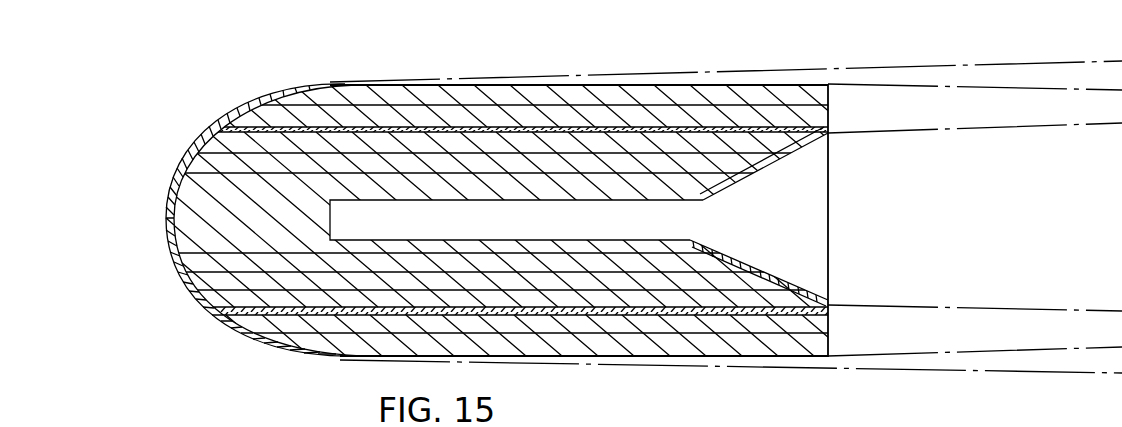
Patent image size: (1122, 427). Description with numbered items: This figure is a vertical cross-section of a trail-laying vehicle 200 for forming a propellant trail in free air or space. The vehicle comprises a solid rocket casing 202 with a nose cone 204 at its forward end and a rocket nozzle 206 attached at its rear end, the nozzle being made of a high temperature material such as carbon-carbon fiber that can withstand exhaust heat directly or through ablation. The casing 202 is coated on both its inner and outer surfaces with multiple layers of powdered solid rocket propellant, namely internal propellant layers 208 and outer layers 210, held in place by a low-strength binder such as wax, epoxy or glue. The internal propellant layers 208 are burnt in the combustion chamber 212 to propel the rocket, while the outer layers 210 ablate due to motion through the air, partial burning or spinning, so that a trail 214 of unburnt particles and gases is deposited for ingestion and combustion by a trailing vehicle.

The trail-laying vehicle 200 is at (165, 163).
The solid rocket casing 202 is at (277, 128).
The nose cone 204 is at (170, 233).
The rocket nozzle 206 is at (792, 156).
The internal propellant layers 208 is at (773, 298).
The outer propellant layers 210 is at (818, 122).
The combustion chamber 212 is at (622, 227).
The trail 214 is at (983, 77).